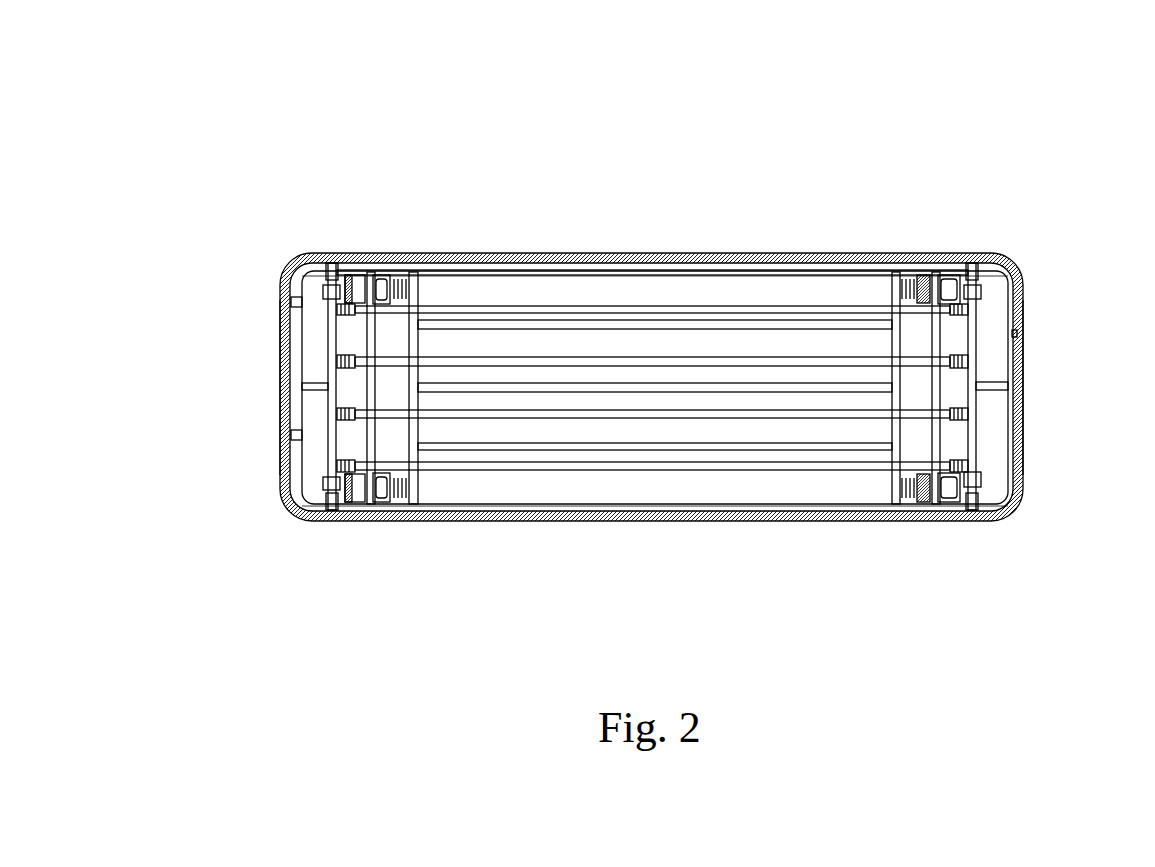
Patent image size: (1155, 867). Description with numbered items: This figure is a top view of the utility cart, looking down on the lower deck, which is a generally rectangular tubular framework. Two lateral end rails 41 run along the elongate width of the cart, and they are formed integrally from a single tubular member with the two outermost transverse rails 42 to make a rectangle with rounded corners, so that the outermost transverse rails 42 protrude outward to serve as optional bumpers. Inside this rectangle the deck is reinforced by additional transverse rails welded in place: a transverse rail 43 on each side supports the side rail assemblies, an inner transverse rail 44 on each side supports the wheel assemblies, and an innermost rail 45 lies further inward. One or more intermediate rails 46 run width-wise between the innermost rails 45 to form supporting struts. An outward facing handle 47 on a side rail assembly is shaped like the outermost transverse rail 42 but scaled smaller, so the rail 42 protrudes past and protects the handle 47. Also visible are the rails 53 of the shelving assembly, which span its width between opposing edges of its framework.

The lateral end rail 41 is at (610, 252).
The outermost transverse rail 42 is at (283, 402).
The transverse rail 43 is at (326, 438).
The inner transverse rail 44 is at (338, 463).
The innermost lateral rail 45 is at (413, 483).
The intermediate rail 46 is at (532, 445).
The handle 47 is at (295, 317).
The rail 53 is at (800, 355).